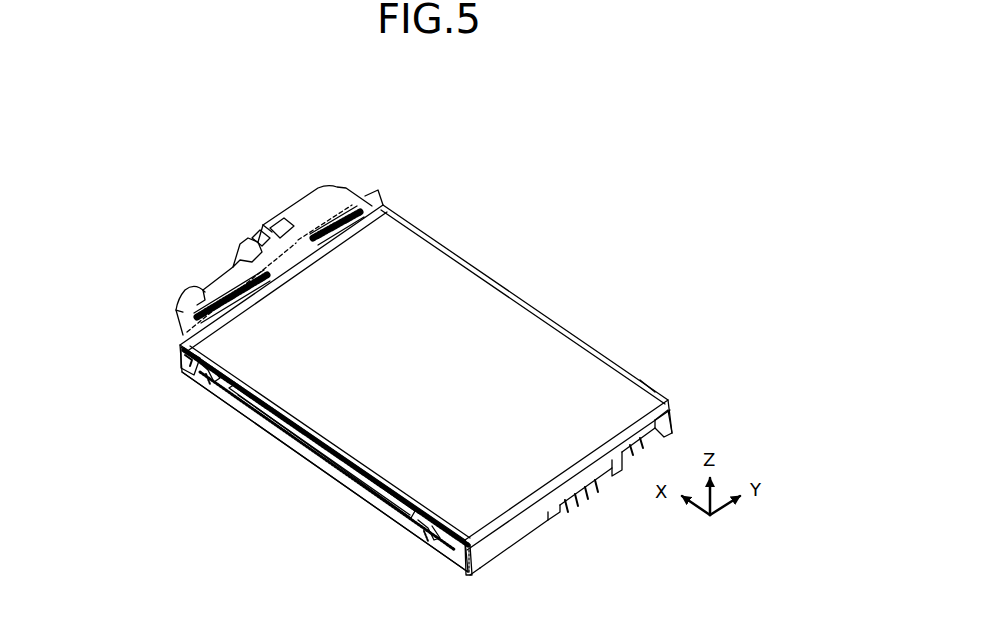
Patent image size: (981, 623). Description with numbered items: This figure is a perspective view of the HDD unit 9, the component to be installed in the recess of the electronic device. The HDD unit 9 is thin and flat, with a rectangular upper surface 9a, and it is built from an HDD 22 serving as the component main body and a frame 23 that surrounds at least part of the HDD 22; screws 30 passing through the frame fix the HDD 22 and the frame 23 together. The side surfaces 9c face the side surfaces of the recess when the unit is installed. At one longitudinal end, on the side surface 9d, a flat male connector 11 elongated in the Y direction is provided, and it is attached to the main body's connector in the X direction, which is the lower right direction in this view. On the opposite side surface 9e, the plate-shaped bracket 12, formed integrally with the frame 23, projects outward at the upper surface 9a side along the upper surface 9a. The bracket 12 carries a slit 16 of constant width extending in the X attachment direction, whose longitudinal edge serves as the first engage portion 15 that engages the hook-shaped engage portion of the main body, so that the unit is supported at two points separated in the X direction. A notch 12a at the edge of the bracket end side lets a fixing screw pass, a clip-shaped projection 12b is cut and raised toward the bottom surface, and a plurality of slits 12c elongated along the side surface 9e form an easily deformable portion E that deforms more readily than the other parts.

The HDD unit 9 is at (392, 128).
The upper surface 9a is at (540, 337).
The side surface 9c is at (630, 374).
The side surface 9d is at (487, 560).
The side surface 9e is at (180, 352).
The connector 11 is at (540, 527).
The bracket 12 is at (333, 185).
The notch 12a is at (240, 240).
The clip-shaped projection 12b is at (205, 285).
The slits 12c is at (322, 227).
The first engage portion 15 is at (256, 235).
The slit 16 is at (274, 228).
The HDD 22 is at (485, 302).
The frame 23 is at (229, 403).
The screw 30 is at (210, 380).
The easily deformable portion E is at (376, 196).